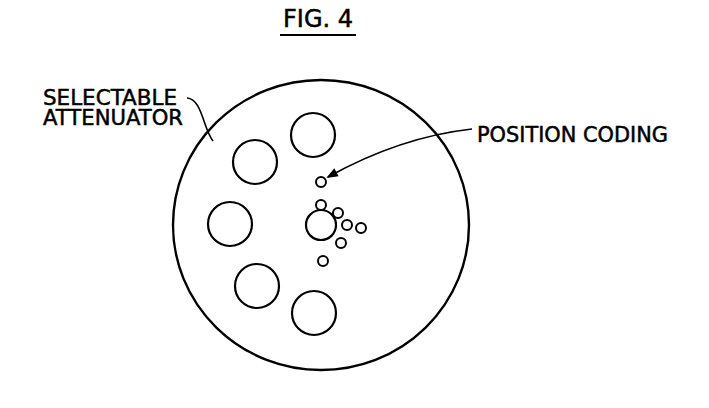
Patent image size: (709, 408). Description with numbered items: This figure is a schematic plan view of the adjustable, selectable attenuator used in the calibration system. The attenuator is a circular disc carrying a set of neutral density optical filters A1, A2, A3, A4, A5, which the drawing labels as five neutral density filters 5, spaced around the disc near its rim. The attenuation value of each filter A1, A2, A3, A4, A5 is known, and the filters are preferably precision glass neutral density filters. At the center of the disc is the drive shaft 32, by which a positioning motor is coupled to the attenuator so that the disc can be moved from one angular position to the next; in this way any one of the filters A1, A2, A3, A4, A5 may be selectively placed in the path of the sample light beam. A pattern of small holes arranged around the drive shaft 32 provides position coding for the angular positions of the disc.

The drive shaft 32 is at (350, 217).
The neutral density filters 5 is at (419, 191).
The neutral density optical filter A1 is at (313, 135).
The neutral density optical filter A2 is at (255, 162).
The neutral density optical filter A3 is at (230, 224).
The neutral density optical filter A4 is at (257, 286).
The neutral density optical filter A5 is at (314, 313).